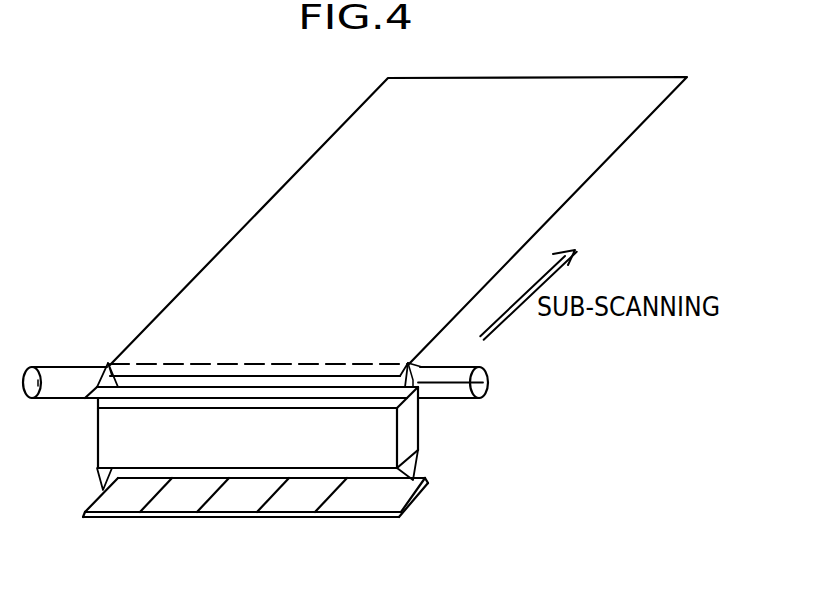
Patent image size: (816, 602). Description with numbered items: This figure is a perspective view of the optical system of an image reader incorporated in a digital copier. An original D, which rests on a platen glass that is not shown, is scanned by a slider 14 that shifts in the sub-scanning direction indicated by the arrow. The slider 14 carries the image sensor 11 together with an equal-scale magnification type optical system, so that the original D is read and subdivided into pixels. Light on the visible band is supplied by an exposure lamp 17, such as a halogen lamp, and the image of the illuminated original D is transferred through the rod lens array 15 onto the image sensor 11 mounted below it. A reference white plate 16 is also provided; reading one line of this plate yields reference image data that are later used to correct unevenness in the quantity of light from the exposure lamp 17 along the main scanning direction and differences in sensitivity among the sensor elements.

The original D is at (624, 142).
The image sensor 11 is at (168, 520).
The slider 14 is at (497, 453).
The rod lens array 15 is at (408, 430).
The reference white plate 16 is at (97, 400).
The exposure lamp 17 is at (490, 369).